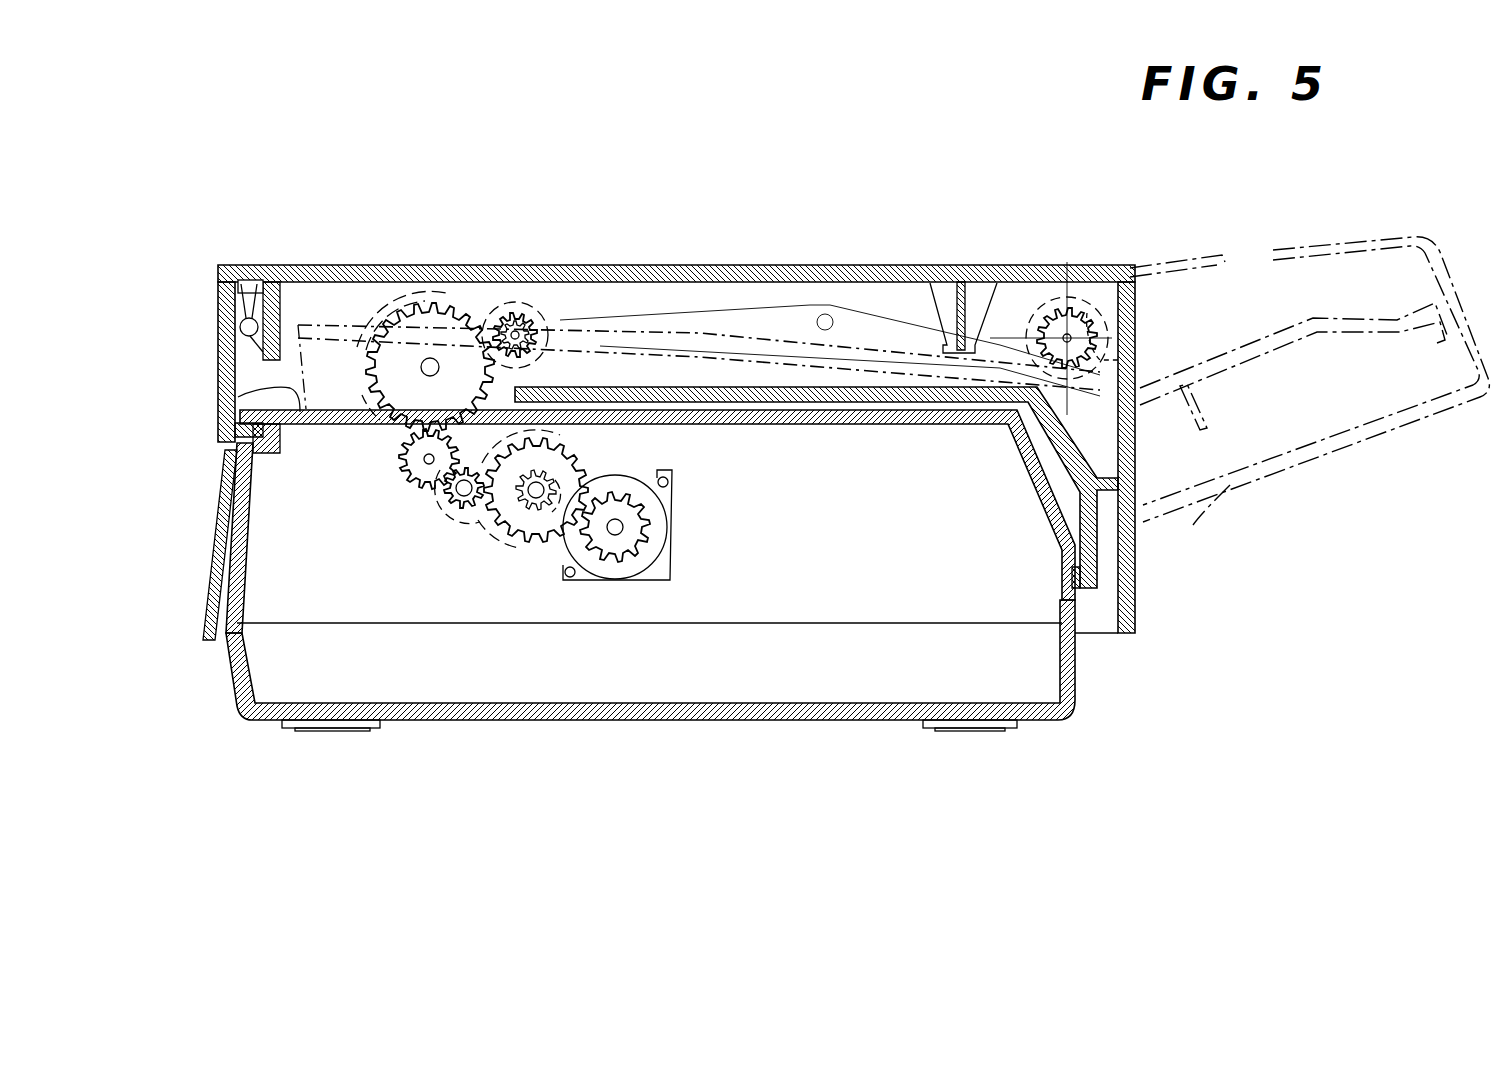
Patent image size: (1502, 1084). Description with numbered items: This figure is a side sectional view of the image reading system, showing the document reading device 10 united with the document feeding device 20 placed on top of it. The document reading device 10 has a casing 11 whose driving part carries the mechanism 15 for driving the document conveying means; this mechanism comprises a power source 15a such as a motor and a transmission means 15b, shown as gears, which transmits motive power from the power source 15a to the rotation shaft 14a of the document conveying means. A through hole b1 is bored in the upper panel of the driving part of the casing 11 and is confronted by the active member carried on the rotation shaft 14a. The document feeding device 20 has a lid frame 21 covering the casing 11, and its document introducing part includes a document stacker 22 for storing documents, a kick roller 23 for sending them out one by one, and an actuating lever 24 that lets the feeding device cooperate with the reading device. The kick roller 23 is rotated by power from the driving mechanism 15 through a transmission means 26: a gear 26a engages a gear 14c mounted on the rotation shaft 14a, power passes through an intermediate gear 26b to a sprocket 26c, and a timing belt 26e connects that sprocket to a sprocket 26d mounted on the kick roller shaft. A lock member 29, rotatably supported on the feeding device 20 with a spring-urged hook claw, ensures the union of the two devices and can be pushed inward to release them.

The document reading device 10 is at (915, 745).
The casing 11 is at (230, 667).
The document feeding device 20 is at (639, 368).
The lid frame 21 is at (347, 265).
The document stacker 22 is at (1335, 440).
The kick roller 23 is at (1087, 313).
The actuating lever 24 is at (870, 317).
The transmission means 26 is at (705, 273).
The gear 26a is at (448, 305).
The intermediate gear 26b is at (500, 312).
The sprocket 26c is at (546, 303).
The sprocket 26d is at (1022, 305).
The timing belt 26e is at (410, 187).
The lock member 29 is at (237, 265).
The through hole b1 is at (225, 400).
The rotation shaft 14a is at (463, 490).
The gear 14c is at (425, 462).
The mechanism for driving the document conveying means 15 is at (575, 647).
The power source 15a is at (618, 540).
The transmission means 15b is at (535, 495).